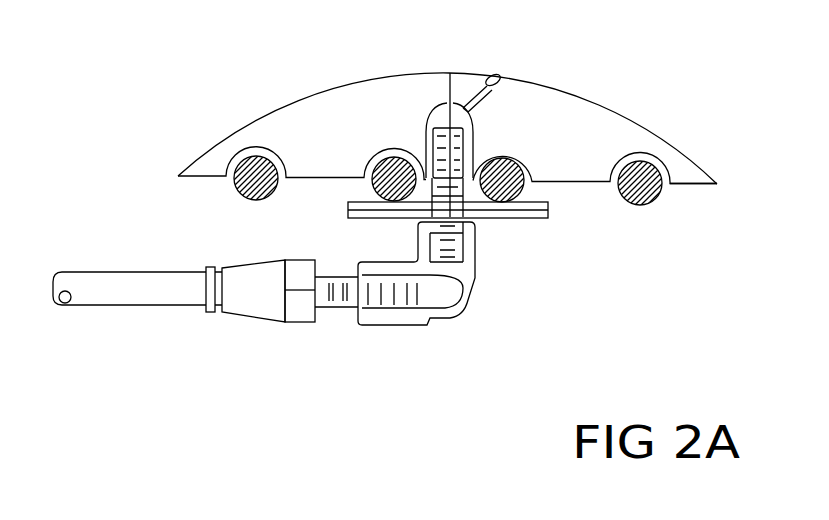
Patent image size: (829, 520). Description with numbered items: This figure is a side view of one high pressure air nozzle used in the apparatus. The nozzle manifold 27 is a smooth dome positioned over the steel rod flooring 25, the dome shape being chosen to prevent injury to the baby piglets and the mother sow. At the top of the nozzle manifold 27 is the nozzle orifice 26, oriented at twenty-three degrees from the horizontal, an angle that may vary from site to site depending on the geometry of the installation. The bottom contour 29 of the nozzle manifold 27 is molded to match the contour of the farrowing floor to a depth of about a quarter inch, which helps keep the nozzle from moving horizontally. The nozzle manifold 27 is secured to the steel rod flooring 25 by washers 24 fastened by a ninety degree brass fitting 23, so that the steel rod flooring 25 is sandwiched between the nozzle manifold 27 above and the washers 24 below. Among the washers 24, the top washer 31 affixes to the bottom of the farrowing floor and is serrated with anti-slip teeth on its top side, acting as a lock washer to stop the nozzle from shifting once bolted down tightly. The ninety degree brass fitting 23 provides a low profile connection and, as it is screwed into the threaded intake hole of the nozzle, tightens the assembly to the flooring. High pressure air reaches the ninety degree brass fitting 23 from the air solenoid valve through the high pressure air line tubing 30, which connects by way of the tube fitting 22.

The tube fitting 22 is at (232, 262).
The 90 degree brass fitting 23 is at (474, 294).
The washers 24 is at (537, 219).
The steel rod flooring 25 is at (643, 205).
The nozzle orifice 26 is at (500, 72).
The nozzle manifold 27 is at (327, 91).
The bottom contour 29 is at (680, 191).
The high pressure air line tubing 30 is at (130, 306).
The top washer 31 is at (357, 216).